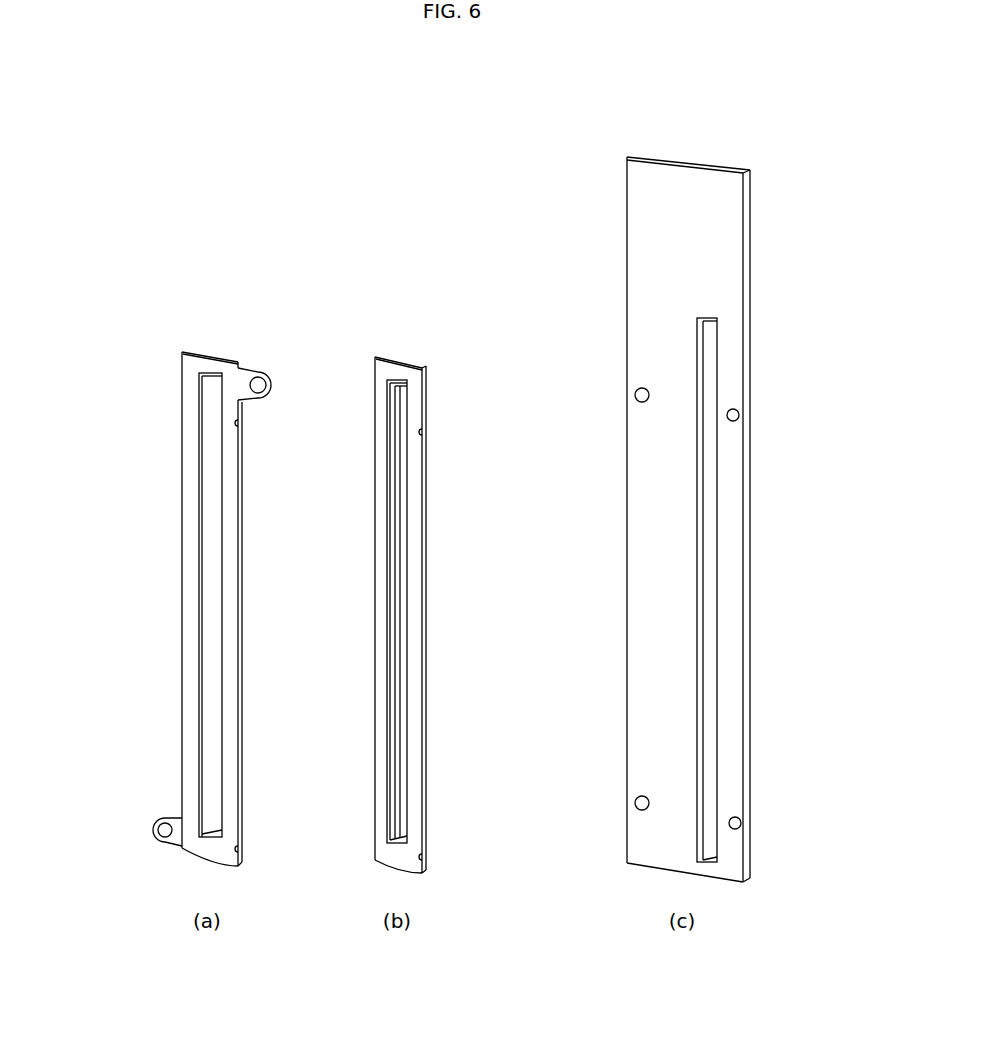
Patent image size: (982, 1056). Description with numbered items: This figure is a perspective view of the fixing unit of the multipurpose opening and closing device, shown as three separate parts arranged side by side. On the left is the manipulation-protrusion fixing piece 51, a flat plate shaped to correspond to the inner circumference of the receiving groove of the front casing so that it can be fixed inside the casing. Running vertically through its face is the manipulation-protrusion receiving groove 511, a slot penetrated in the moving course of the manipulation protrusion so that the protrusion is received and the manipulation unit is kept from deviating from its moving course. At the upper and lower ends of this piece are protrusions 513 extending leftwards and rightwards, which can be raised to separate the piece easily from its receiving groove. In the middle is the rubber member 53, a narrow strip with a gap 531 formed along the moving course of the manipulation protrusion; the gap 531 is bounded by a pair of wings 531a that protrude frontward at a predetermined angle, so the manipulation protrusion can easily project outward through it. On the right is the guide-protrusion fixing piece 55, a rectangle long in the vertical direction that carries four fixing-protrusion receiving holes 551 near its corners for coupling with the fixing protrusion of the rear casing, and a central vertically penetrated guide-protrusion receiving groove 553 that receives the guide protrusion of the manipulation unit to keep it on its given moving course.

The manipulation-protrusion fixing piece 51 is at (175, 340).
The manipulation-protrusion receiving groove 511 is at (213, 437).
The protrusions 513 is at (258, 387).
The rubber member 53 is at (358, 354).
The gap 531 is at (395, 455).
The wings 531a is at (403, 407).
The guide-protrusion fixing piece 55 is at (610, 141).
The fixing-protrusion receiving holes 551 is at (642, 395).
The guide-protrusion receiving groove 553 is at (712, 558).